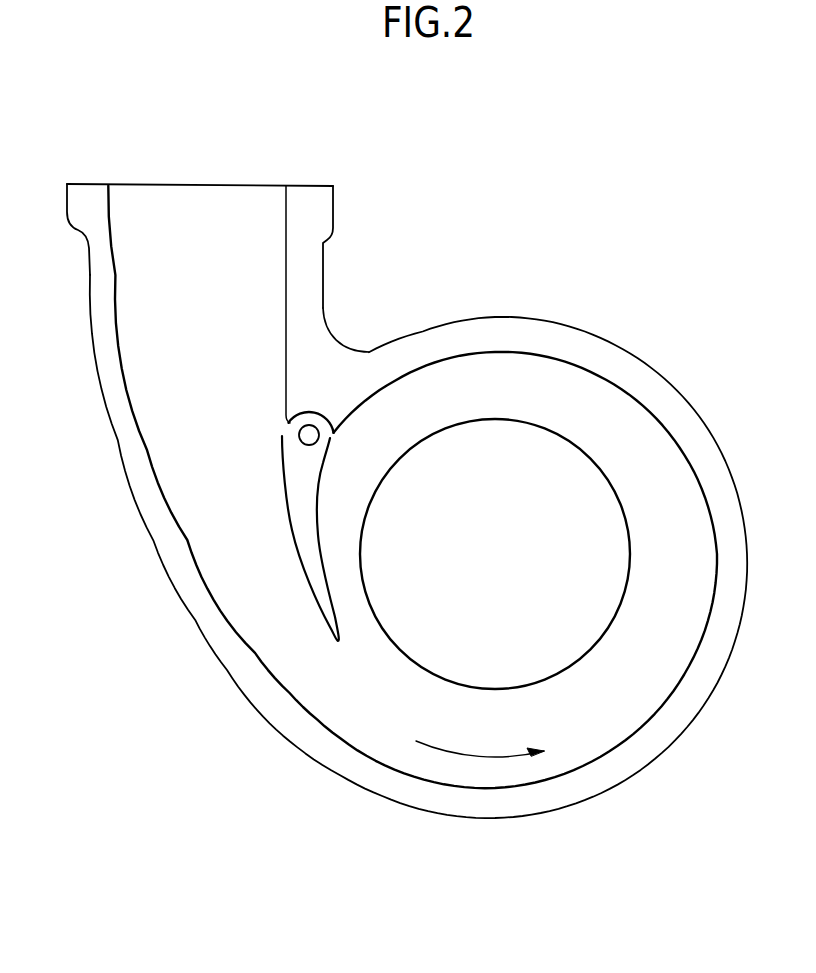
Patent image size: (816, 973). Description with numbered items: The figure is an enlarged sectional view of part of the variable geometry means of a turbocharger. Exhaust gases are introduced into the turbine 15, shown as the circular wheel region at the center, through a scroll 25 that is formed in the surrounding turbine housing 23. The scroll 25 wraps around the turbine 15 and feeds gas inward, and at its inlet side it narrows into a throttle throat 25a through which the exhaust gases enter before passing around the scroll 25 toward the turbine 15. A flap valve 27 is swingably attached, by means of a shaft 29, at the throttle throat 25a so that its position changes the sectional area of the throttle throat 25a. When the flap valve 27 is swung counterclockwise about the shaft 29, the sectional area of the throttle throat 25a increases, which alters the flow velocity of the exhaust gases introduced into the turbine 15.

The turbine 15 is at (504, 571).
The turbine housing 23 is at (645, 360).
The scroll 25 is at (679, 553).
The throttle throat 25a is at (262, 643).
The flap valve 27 is at (292, 537).
The shaft 29 is at (311, 432).